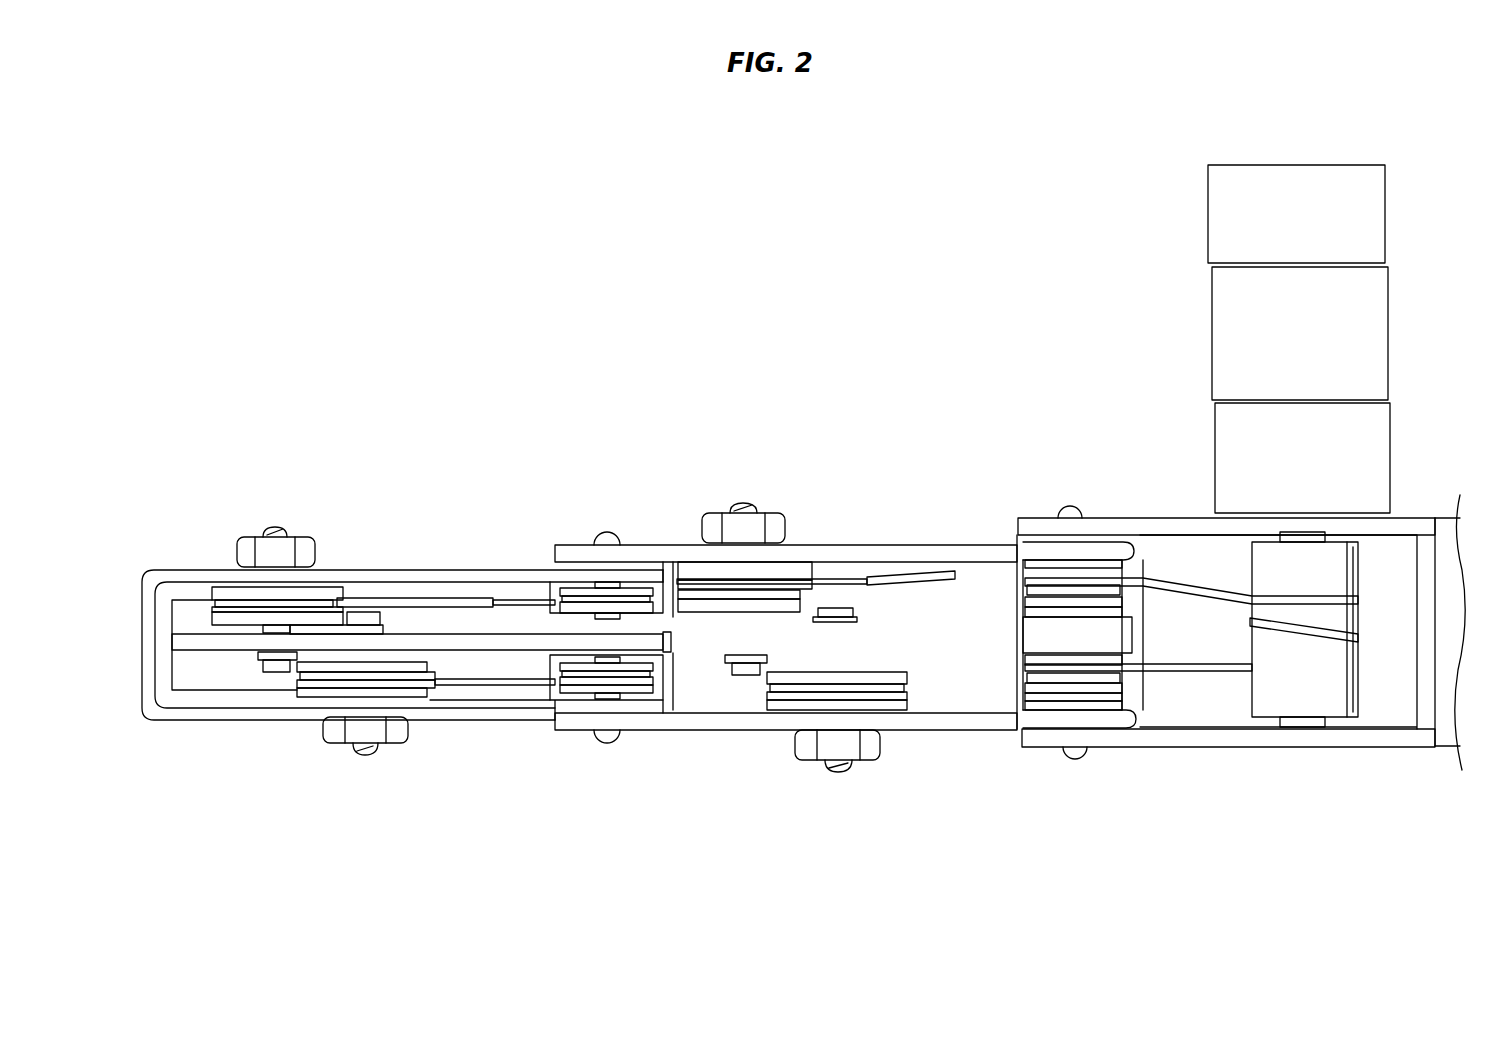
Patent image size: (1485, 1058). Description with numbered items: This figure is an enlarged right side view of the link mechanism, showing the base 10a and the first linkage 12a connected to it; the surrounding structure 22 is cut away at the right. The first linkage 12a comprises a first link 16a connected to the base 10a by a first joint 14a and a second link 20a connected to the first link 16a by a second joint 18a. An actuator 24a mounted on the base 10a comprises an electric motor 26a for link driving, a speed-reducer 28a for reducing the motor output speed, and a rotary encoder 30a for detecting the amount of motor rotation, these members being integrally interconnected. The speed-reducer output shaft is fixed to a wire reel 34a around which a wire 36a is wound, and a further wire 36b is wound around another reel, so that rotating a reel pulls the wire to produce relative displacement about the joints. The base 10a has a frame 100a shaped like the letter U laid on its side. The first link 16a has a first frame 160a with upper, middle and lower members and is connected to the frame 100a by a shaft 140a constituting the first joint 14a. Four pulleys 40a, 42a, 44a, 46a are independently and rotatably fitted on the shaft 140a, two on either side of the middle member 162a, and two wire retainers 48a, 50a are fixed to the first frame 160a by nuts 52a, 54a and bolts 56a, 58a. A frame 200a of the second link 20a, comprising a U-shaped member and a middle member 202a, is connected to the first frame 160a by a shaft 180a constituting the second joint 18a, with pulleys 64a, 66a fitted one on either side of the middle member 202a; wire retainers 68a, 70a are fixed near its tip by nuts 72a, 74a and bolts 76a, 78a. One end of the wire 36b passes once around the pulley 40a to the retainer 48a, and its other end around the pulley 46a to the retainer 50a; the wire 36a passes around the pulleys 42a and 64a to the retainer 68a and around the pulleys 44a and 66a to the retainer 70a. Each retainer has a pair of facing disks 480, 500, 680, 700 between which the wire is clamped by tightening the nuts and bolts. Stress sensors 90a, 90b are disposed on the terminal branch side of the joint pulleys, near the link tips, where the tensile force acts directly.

The base 10a is at (1184, 516).
The first linkage 12a is at (684, 526).
The first joint 14a is at (1069, 499).
The first link 16a is at (652, 536).
The second joint 18a is at (596, 526).
The second link 20a is at (358, 552).
The housing 22 is at (1437, 650).
The actuator 24a is at (1194, 428).
The electric motor 26a is at (1270, 355).
The speed-reducer 28a is at (1275, 477).
The rotary encoder 30a is at (1268, 238).
The wire reel 34a is at (1282, 694).
The wire 36a is at (1152, 604).
The wire 36b is at (1160, 563).
The pulley 40a is at (1143, 562).
The pulley 42a is at (1130, 589).
The pulley 44a is at (1118, 674).
The pulley 46a is at (1134, 705).
The wire retainer 48a is at (820, 566).
The wire retainer 50a is at (762, 698).
The nut 52a is at (728, 524).
The nut 54a is at (870, 750).
The bolt 56a is at (748, 668).
The bolt 58a is at (832, 614).
The pulley 64a is at (557, 590).
The pulley 66a is at (645, 692).
The wire retainer 68a is at (203, 618).
The wire retainer 70a is at (287, 679).
The nut 72a is at (245, 544).
The nut 74a is at (337, 733).
The bolt 76a is at (264, 665).
The bolt 78a is at (366, 612).
The stress sensor 90a is at (430, 600).
The stress sensor 90b is at (892, 575).
The frame 100a is at (1110, 738).
The shaft 140a is at (1068, 540).
The first frame 160a is at (977, 722).
The middle member 162a is at (1107, 648).
The shaft 180a is at (600, 560).
The frame 200a is at (467, 708).
The middle member 202a is at (520, 640).
The disks 480 is at (783, 573).
The disks 500 is at (865, 687).
The disks 680 is at (318, 597).
The disks 700 is at (312, 677).